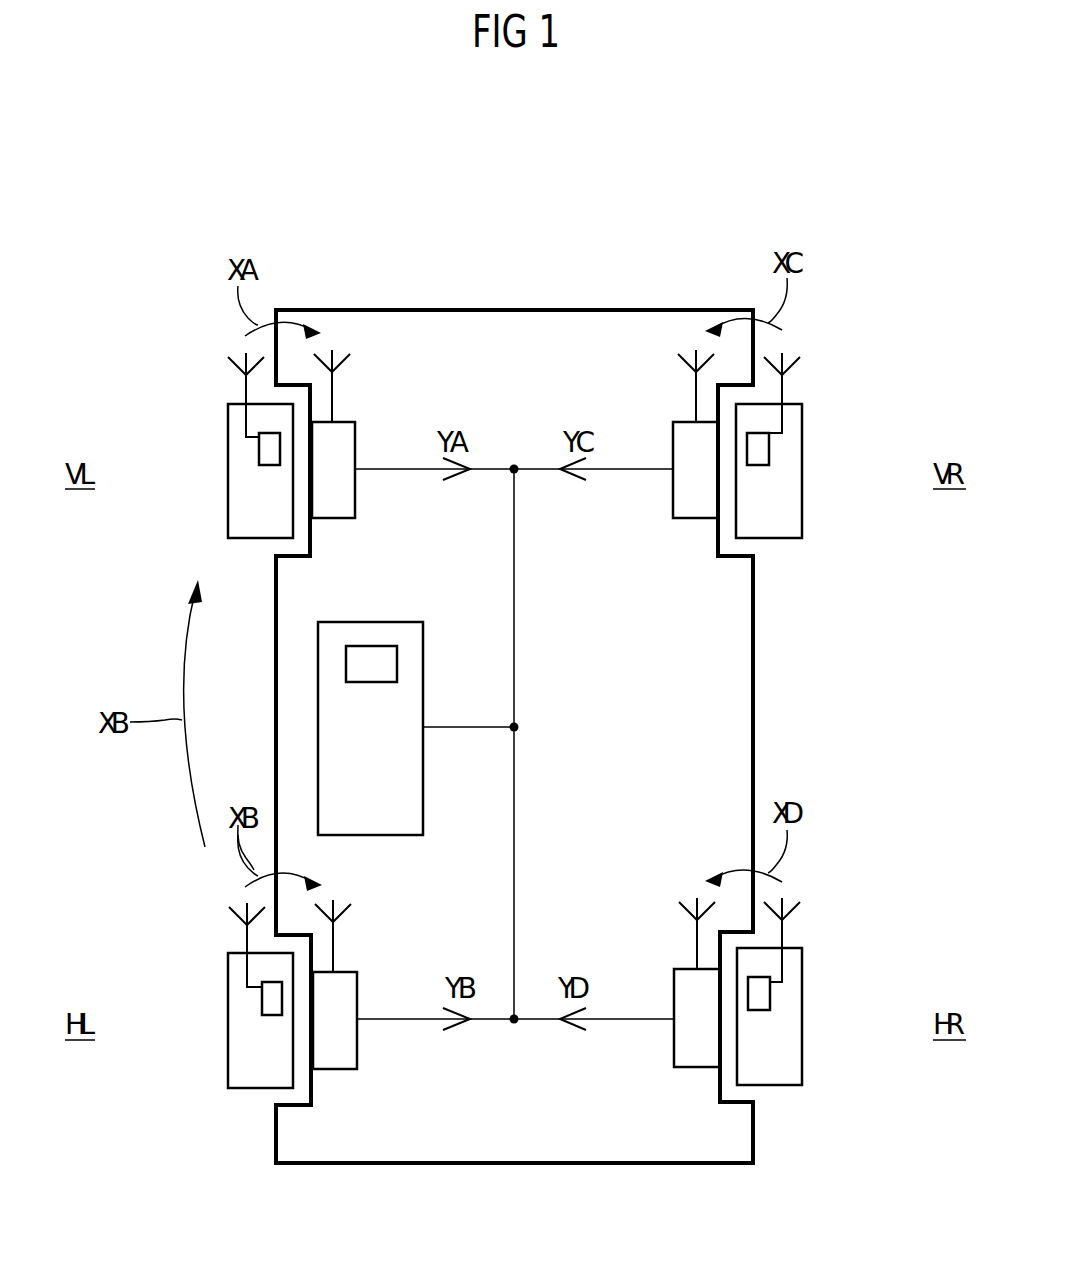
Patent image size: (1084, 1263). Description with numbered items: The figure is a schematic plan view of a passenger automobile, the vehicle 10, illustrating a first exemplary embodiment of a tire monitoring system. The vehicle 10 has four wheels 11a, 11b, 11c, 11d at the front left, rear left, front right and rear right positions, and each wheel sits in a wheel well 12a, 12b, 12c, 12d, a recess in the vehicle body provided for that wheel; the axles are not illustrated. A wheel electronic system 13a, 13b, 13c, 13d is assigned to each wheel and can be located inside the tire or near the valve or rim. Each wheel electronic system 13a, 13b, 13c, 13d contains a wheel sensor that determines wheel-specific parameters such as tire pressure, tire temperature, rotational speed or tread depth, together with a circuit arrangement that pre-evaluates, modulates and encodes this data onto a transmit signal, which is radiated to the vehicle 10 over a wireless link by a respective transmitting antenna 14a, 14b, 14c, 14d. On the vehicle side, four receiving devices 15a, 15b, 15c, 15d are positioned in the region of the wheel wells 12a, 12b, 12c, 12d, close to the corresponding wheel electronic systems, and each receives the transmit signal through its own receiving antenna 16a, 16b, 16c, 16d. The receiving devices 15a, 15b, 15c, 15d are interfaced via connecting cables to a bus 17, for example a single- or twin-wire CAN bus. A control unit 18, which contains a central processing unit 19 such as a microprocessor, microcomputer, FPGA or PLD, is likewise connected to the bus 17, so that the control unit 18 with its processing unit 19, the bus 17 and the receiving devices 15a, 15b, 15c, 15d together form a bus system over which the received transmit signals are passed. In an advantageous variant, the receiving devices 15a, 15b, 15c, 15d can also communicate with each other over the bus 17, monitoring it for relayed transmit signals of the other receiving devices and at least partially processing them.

The vehicle 10 is at (709, 168).
The wheel 11a is at (245, 522).
The wheel 11b is at (245, 1070).
The wheel 11c is at (785, 515).
The wheel 11d is at (785, 1065).
The wheel well 12a is at (313, 545).
The wheel well 12b is at (315, 1095).
The wheel well 12c is at (718, 543).
The wheel well 12d is at (720, 1093).
The wheel electronic system 13a is at (268, 453).
The wheel electronic system 13b is at (268, 1002).
The wheel electronic system 13c is at (757, 450).
The wheel electronic system 13d is at (757, 998).
The transmitting antenna 14a is at (236, 368).
The transmitting antenna 14b is at (236, 918).
The transmitting antenna 14c is at (797, 362).
The transmitting antenna 14d is at (797, 908).
The receiving device 15a is at (343, 498).
The receiving device 15b is at (345, 1048).
The receiving device 15c is at (687, 495).
The receiving device 15d is at (687, 1045).
The receiving antenna 16a is at (337, 403).
The receiving antenna 16b is at (338, 952).
The receiving antenna 16c is at (692, 400).
The receiving antenna 16d is at (692, 948).
The bus 17 is at (515, 845).
The control unit 18 is at (408, 800).
The central processing unit 19 is at (380, 662).